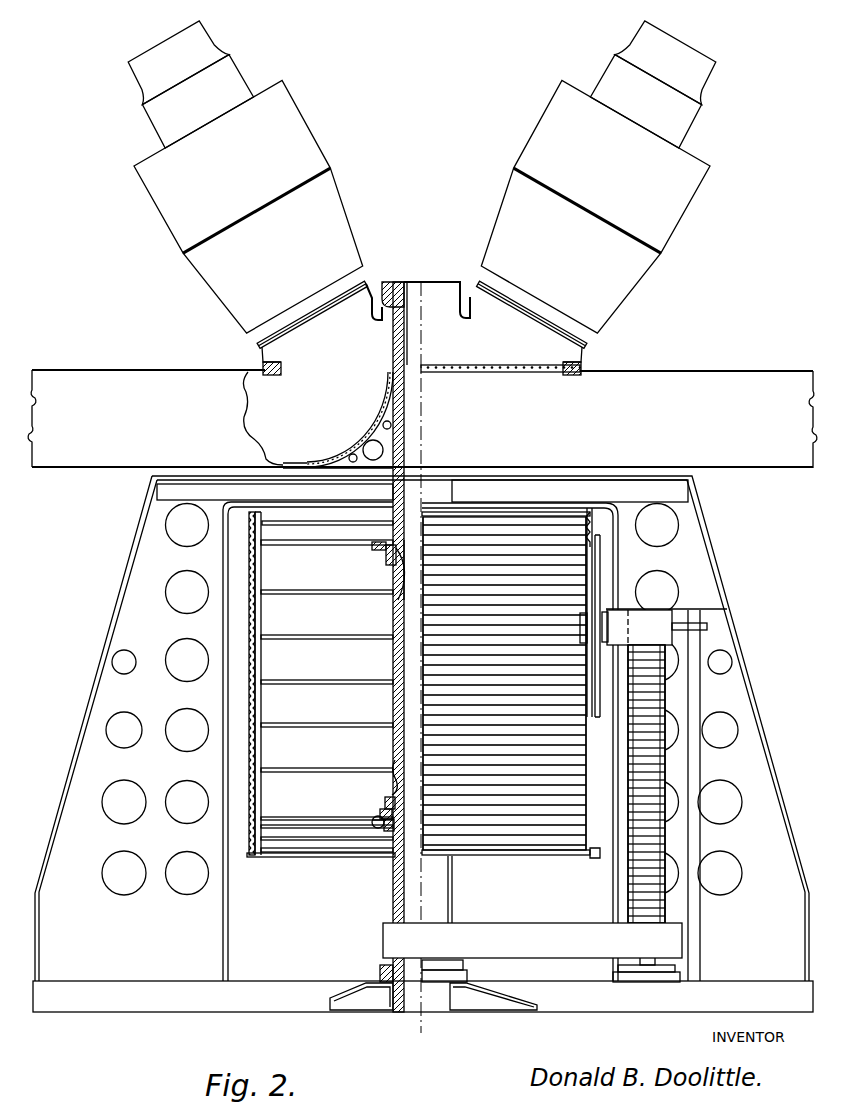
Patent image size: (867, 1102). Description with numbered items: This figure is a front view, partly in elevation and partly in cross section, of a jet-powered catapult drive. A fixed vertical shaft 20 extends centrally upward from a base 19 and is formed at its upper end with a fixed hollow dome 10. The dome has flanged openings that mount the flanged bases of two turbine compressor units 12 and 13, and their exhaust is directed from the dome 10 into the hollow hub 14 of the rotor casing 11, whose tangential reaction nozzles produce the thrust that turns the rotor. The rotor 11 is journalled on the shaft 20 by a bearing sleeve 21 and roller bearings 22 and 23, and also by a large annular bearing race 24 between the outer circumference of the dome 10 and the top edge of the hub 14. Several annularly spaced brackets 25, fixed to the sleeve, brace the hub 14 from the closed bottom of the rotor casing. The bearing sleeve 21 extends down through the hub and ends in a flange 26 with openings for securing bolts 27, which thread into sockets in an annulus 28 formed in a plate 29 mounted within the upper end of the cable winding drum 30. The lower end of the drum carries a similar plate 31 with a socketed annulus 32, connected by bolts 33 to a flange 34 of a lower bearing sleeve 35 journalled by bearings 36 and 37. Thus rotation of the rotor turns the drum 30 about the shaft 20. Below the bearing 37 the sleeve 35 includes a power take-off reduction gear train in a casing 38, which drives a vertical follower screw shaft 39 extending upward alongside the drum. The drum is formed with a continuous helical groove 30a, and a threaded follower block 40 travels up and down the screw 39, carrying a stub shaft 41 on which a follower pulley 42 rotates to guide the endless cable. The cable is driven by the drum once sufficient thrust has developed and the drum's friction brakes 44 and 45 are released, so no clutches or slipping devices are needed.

The fixed hollow dome 10 is at (387, 290).
The rotor casing 11 is at (105, 359).
The turbine compressor unit 12 is at (352, 136).
The turbine compressor unit 13 is at (543, 127).
The hollow hub 14 is at (329, 396).
The base 19 is at (388, 1000).
The fixed vertical shaft 20 is at (400, 902).
The bearing sleeve 21 is at (366, 314).
The roller bearing 22 is at (410, 605).
The roller bearing 23 is at (435, 288).
The annular bearing race 24 is at (582, 370).
The bracket 25 is at (383, 440).
The flange 26 is at (388, 545).
The securing bolt 27 is at (395, 595).
The annulus 28 is at (410, 585).
The plate 29 is at (316, 545).
The cable winding drum 30 is at (262, 703).
The continuous groove 30a is at (253, 832).
The plate 31 is at (290, 810).
The socketed annulus 32 is at (388, 812).
The bolt 33 is at (386, 820).
The flange 34 is at (392, 836).
The bearing sleeve 35 is at (397, 870).
The bearing 36 is at (392, 795).
The bearing 37 is at (380, 967).
The casing 38 is at (506, 928).
The follower screw shaft 39 is at (662, 913).
The threaded follower block 40 is at (652, 625).
The stub shaft 41 is at (612, 648).
The follower pulley 42 is at (600, 578).
The friction brake 44 is at (273, 857).
The friction brake 45 is at (254, 520).